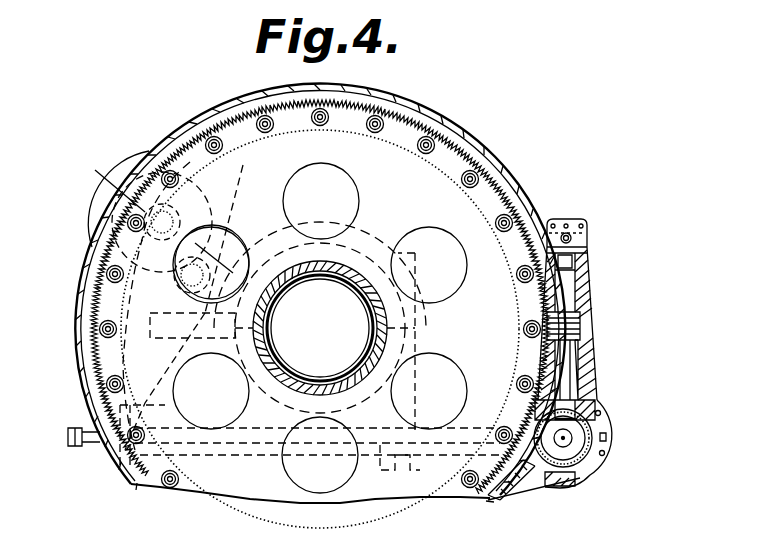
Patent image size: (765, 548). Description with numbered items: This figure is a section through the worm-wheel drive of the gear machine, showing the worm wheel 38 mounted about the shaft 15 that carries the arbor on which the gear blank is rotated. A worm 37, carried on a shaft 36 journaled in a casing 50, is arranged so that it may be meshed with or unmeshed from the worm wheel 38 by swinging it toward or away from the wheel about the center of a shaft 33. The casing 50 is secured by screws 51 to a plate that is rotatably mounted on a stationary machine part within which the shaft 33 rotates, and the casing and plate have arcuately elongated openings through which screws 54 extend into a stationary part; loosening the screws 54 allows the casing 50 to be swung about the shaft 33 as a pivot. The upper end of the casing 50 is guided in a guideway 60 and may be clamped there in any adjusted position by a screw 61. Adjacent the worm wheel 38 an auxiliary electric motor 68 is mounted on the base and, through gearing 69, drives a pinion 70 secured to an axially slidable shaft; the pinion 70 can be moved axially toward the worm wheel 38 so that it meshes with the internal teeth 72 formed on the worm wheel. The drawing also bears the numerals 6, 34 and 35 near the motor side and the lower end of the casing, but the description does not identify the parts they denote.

The starter motor 6 is at (107, 170).
The shaft 15 is at (353, 370).
The shaft 33 is at (568, 442).
The pin 34 is at (592, 440).
The block 35 is at (588, 410).
The shaft 36 is at (562, 378).
The worm 37 is at (582, 324).
The worm wheel 38 is at (497, 192).
The casing 50 is at (595, 295).
The screws 51 is at (605, 455).
The screws 54 is at (607, 437).
The guideway 60 is at (582, 238).
The screw 61 is at (566, 233).
The auxiliary electric motor 68 is at (96, 293).
The gearing 69 is at (216, 200).
The pinion 70 is at (172, 220).
The internal teeth 72 is at (300, 128).